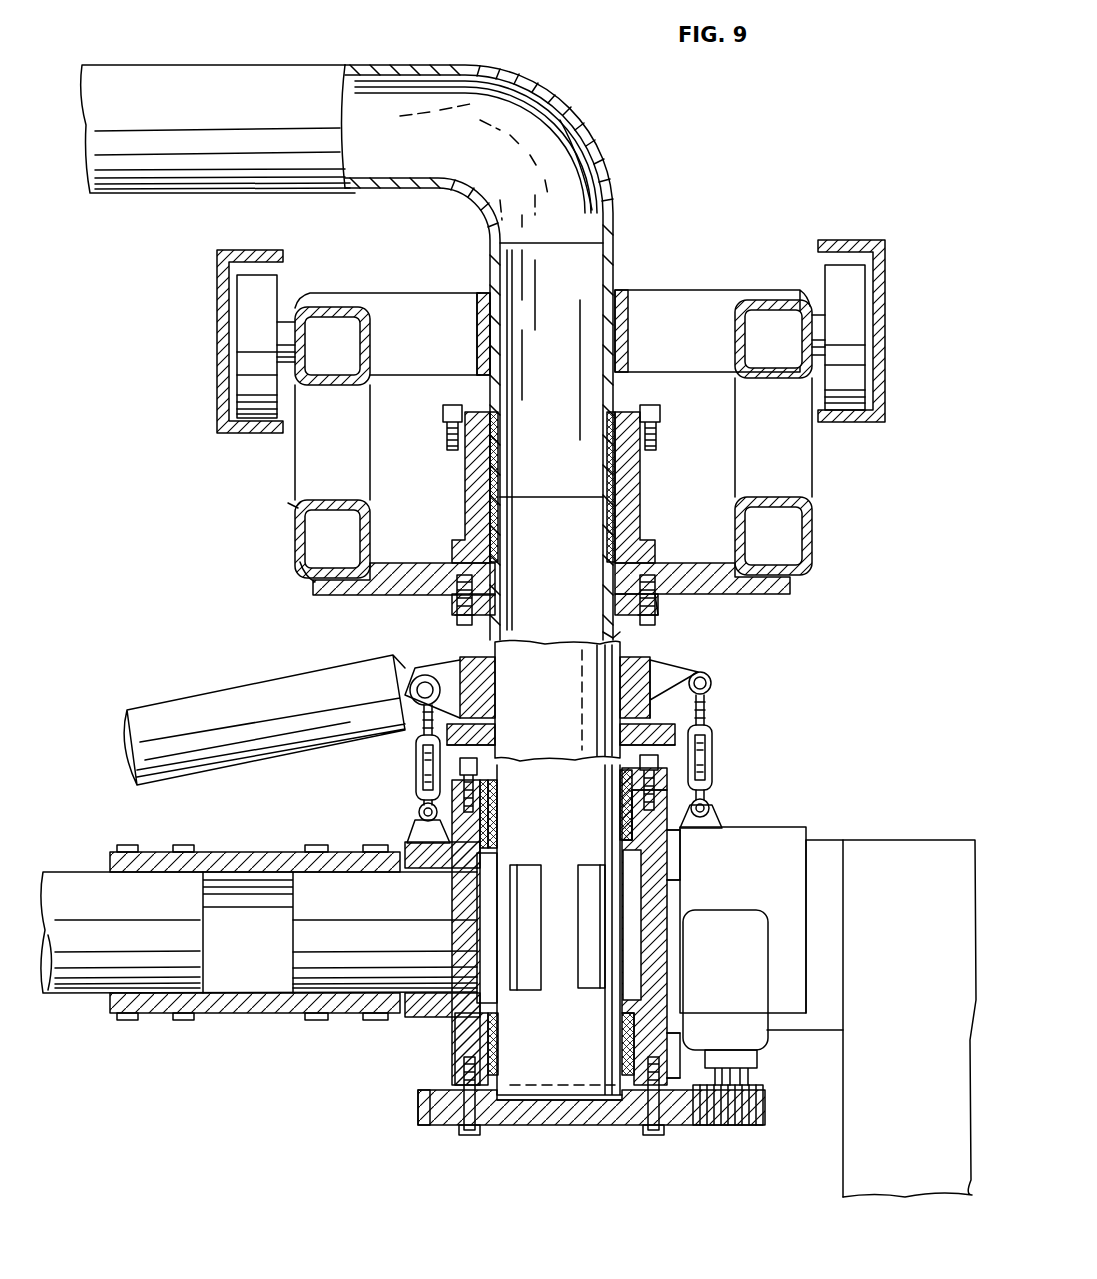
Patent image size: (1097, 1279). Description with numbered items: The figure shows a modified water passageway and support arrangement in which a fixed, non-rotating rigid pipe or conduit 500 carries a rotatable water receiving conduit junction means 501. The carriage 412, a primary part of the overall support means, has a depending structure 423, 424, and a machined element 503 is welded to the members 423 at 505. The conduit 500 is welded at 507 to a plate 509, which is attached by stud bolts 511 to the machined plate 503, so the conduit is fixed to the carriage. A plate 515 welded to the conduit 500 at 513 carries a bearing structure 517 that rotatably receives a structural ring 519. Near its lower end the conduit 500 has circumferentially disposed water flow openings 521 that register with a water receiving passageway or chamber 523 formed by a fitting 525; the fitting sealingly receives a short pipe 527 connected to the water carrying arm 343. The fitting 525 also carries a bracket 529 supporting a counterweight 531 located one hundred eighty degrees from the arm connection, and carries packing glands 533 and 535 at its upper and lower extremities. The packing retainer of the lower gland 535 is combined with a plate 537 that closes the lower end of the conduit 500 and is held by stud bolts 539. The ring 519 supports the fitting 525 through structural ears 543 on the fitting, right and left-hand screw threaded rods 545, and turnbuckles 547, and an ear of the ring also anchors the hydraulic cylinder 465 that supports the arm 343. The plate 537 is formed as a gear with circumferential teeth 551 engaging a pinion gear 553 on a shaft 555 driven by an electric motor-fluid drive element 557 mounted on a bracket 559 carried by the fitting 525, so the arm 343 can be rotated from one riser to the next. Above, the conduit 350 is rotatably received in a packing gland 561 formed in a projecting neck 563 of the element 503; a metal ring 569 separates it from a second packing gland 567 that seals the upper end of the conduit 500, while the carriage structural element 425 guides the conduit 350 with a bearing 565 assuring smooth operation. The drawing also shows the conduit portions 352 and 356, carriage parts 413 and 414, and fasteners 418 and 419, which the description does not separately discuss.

The horizontal conduit section 352 is at (218, 74).
The conduit 350 is at (531, 78).
The elbow bend 356 is at (578, 158).
The carriage 412 is at (779, 256).
The guide bracket 414 is at (225, 306).
The roller wheel 413 is at (247, 340).
The carriage structural element 425 is at (670, 300).
The bearing 565 is at (483, 292).
The depending structure 424 is at (295, 472).
The depending structure member 423 is at (298, 562).
The projecting neck 563 is at (470, 464).
The metal ring 569 is at (488, 480).
The packing gland 561 is at (637, 464).
The packing gland 567 is at (625, 520).
The stud bolts 511 is at (462, 582).
The machined element 503 is at (402, 590).
The plate 509 is at (660, 602).
The weld 505 is at (795, 587).
The weld 507 is at (625, 632).
The bearing structure 517 is at (485, 657).
The fixed non-rotating pipe or conduit 500 is at (557, 700).
The structural ring 519 is at (690, 665).
The right and left-hand screw threaded rods 545 is at (410, 696).
The turnbuckles 547 is at (415, 754).
The plate 515 is at (495, 730).
The weld 513 is at (496, 754).
The hydraulic cylinder 465 is at (222, 702).
The structural ears 543 is at (410, 840).
The packing gland 533 is at (482, 810).
The fitting 525 is at (465, 857).
The short pipe 527 is at (343, 897).
The plate bolt 419 is at (183, 845).
The arm 343 is at (92, 897).
The water receiving passageway or chamber 523 is at (487, 935).
The water flow openings 521 is at (580, 930).
The lower clamp plate 418 is at (255, 1017).
The water receiving conduit junction means 501 is at (465, 1024).
The packing gland 535 is at (498, 1052).
The circumferential teeth 551 is at (420, 1112).
The stud bolts 539 is at (460, 1134).
The plate 537 is at (530, 1120).
The pinion gear 553 is at (723, 1117).
The shaft 555 is at (748, 1077).
The electric motor-fluid drive element 557 is at (725, 980).
The bracket 559 is at (755, 952).
The bracket 529 is at (824, 852).
The counterweight 531 is at (891, 857).